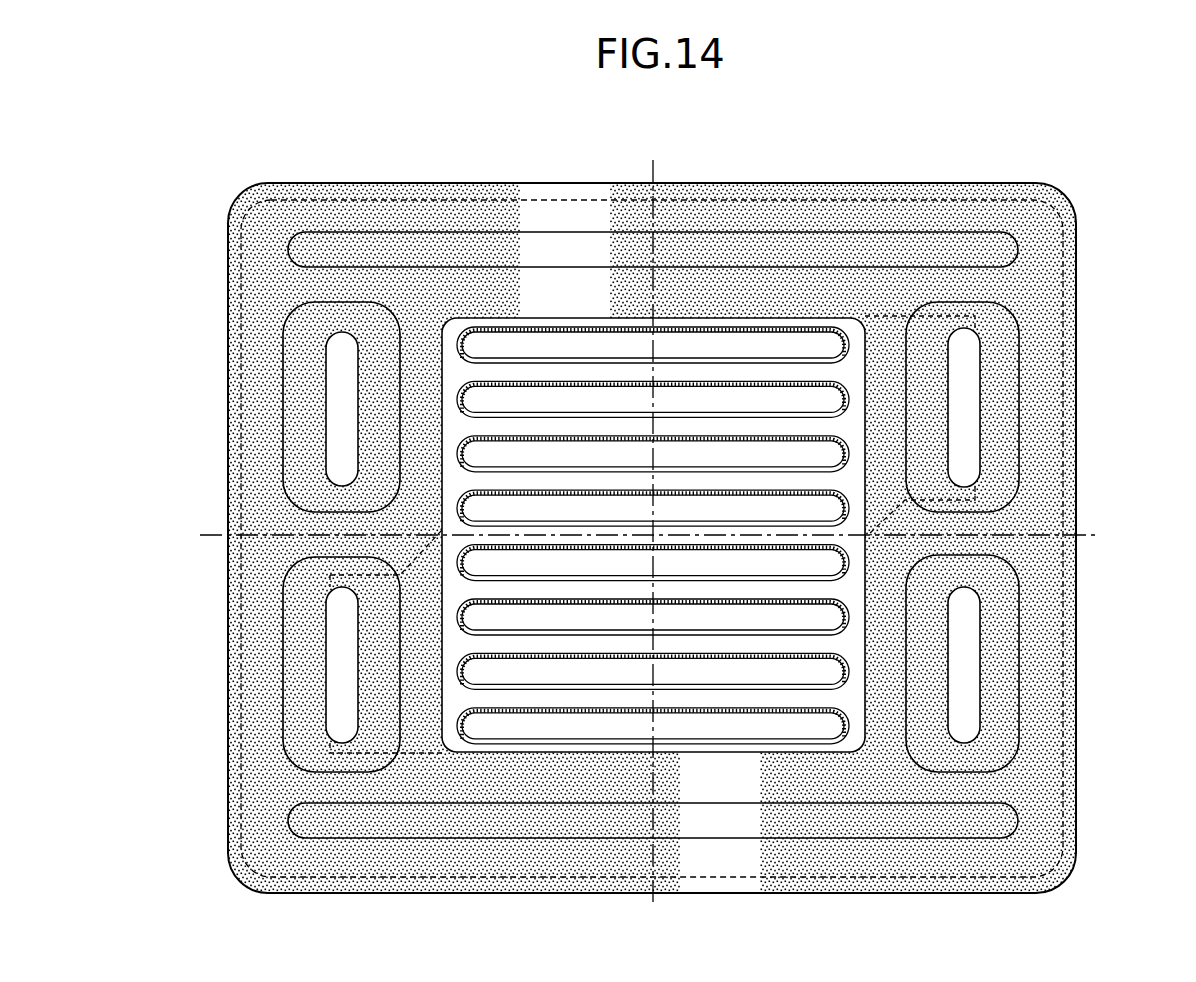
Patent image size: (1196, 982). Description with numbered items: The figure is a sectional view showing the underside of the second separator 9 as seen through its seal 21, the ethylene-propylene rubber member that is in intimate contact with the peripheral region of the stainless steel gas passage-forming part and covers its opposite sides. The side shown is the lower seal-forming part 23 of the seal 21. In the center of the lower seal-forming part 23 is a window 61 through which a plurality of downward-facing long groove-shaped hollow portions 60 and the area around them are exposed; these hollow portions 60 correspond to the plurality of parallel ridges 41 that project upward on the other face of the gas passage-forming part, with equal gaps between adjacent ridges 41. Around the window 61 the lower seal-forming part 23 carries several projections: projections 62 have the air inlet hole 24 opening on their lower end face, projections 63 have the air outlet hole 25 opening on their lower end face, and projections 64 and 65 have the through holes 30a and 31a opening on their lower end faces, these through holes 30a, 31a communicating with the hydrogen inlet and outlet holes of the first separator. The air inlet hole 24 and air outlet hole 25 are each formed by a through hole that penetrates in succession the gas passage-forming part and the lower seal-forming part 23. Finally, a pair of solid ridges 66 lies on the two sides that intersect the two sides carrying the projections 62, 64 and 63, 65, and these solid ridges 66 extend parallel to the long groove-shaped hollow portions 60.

The second separator 9 is at (1072, 200).
The seal 21 is at (1078, 265).
The lower seal-forming part 23 is at (1040, 515).
The air inlet hole 24 is at (331, 688).
The air outlet hole 25 is at (966, 428).
The through hole 30a is at (331, 440).
The through hole 31a is at (966, 692).
The ridges 41 is at (671, 447).
The downward-facing long groove-shaped hollow portions 60 is at (748, 378).
The window 61 is at (600, 320).
The projections 62 is at (300, 622).
The projections 63 is at (1000, 357).
The projections 64 is at (300, 357).
The projections 65 is at (1000, 626).
The solid ridges 66 is at (447, 247).